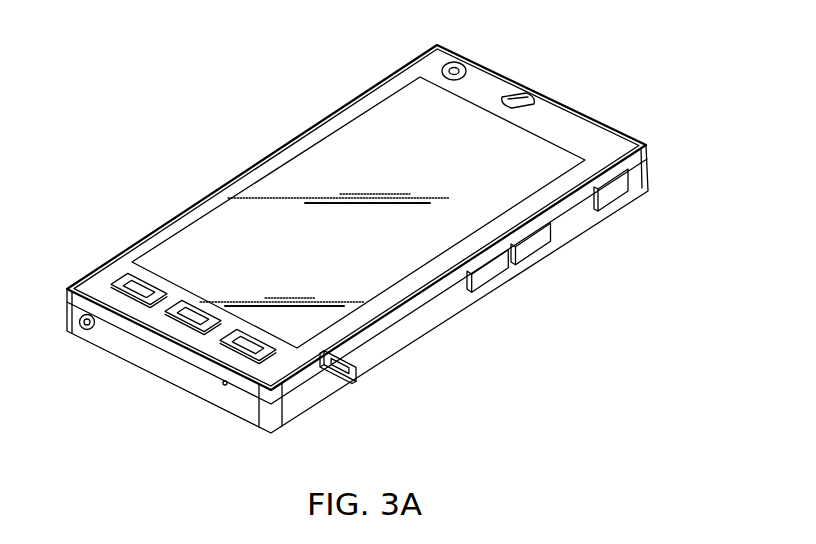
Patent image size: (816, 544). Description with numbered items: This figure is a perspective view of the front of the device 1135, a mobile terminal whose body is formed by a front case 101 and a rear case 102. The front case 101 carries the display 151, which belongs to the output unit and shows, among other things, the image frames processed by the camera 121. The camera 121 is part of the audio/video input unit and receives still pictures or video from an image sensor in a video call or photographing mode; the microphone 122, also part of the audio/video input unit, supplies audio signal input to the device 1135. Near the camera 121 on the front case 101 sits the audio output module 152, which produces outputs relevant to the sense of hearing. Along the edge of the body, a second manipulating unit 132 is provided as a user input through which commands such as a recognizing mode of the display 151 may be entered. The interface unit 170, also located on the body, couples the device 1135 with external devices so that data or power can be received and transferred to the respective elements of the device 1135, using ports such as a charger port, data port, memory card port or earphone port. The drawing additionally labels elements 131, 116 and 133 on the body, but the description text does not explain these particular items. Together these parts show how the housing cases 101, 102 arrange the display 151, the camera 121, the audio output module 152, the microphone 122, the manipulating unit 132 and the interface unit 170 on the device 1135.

The device 1135 is at (262, 62).
The front case 101 is at (649, 152).
The rear case 102 is at (650, 178).
The display 151 is at (293, 163).
The camera 121 is at (461, 66).
The audio output module 152 is at (528, 98).
The manipulation unit 131 is at (112, 281).
The audio jack 116 is at (86, 330).
The microphone 122 is at (224, 387).
The side key 133 is at (346, 371).
The second manipulating unit 132 is at (496, 272).
The interface unit 170 is at (612, 196).